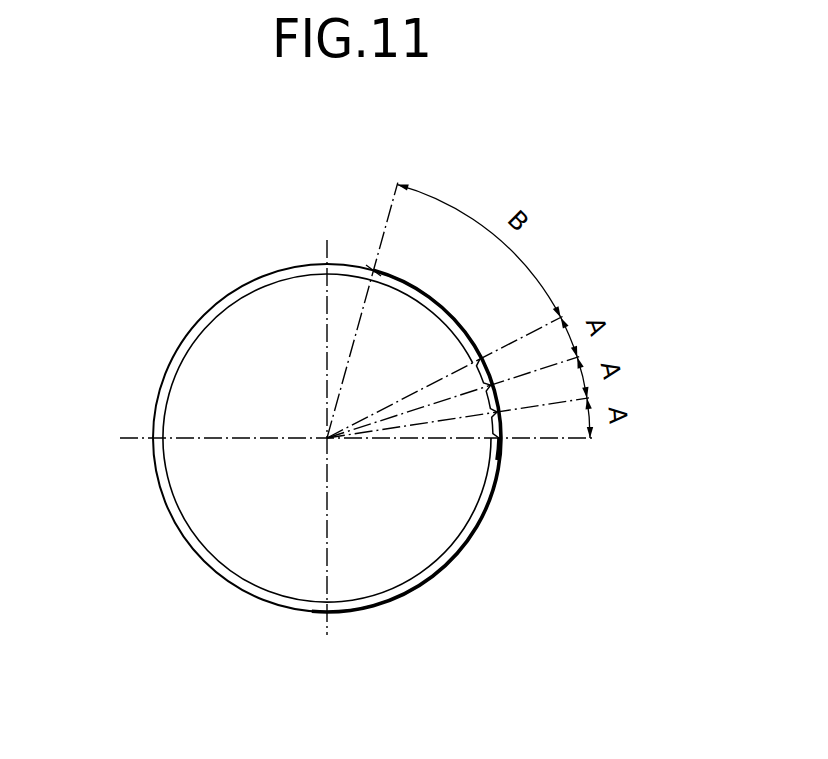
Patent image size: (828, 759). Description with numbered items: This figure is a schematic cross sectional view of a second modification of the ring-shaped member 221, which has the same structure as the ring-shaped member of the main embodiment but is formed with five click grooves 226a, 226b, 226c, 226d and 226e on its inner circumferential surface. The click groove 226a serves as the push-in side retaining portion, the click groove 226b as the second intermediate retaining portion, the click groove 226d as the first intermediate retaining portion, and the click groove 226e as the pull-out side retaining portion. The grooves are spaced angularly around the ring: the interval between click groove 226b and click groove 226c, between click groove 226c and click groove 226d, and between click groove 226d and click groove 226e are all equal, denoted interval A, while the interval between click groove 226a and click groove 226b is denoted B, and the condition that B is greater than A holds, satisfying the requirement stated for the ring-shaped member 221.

The ring-shaped member 221 is at (177, 346).
The click groove 226a is at (372, 275).
The click groove 226b is at (482, 359).
The click groove 226c is at (493, 385).
The click groove 226d is at (499, 412).
The click groove 226e is at (503, 443).